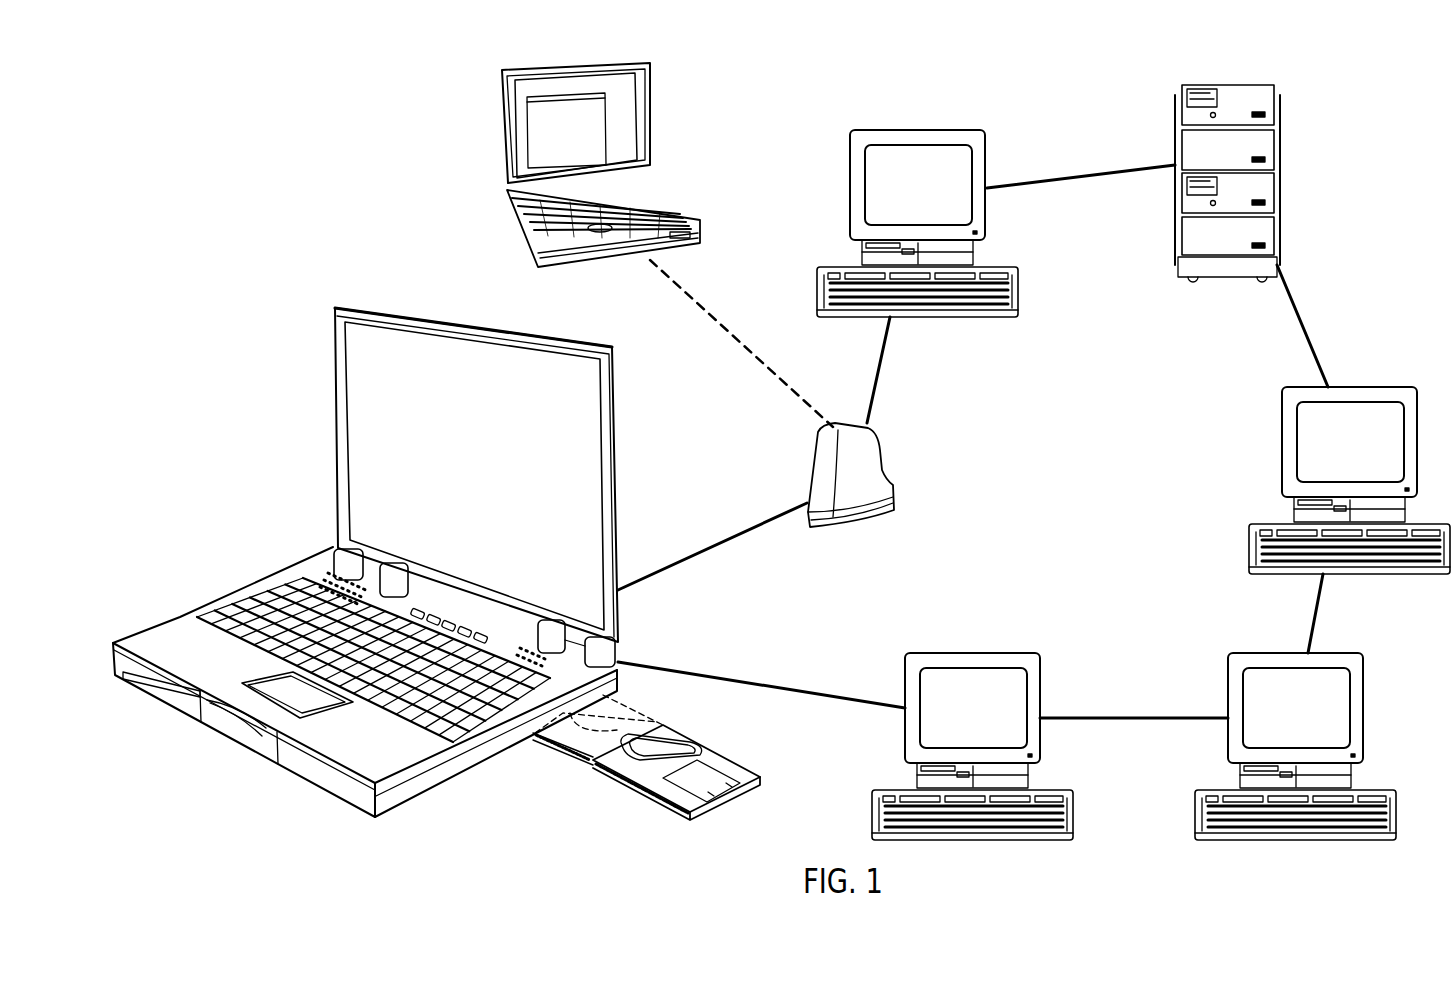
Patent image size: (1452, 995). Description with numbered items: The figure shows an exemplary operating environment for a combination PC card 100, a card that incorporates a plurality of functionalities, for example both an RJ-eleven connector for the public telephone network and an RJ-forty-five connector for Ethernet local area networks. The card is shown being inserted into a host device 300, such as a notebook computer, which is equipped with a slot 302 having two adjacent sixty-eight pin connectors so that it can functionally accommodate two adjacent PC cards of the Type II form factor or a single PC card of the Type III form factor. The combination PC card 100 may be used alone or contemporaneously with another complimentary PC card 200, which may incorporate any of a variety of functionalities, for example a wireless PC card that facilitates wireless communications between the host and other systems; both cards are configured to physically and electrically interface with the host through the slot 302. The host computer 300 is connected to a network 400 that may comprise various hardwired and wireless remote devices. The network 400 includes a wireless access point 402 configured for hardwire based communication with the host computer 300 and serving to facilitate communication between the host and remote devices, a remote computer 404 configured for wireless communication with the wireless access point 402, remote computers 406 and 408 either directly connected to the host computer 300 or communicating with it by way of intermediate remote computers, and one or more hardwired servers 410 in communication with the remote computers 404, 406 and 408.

The combination PC card 100 is at (638, 818).
The complimentary PC card 200 is at (545, 768).
The host device 300 is at (295, 482).
The slot 302 is at (645, 718).
The network 400 is at (1090, 481).
The wireless access point 402 is at (738, 506).
The remote computer 404 is at (563, 141).
The remote computer 406 is at (899, 200).
The remote computer 408 is at (954, 723).
The hardwired server 410 is at (1328, 216).